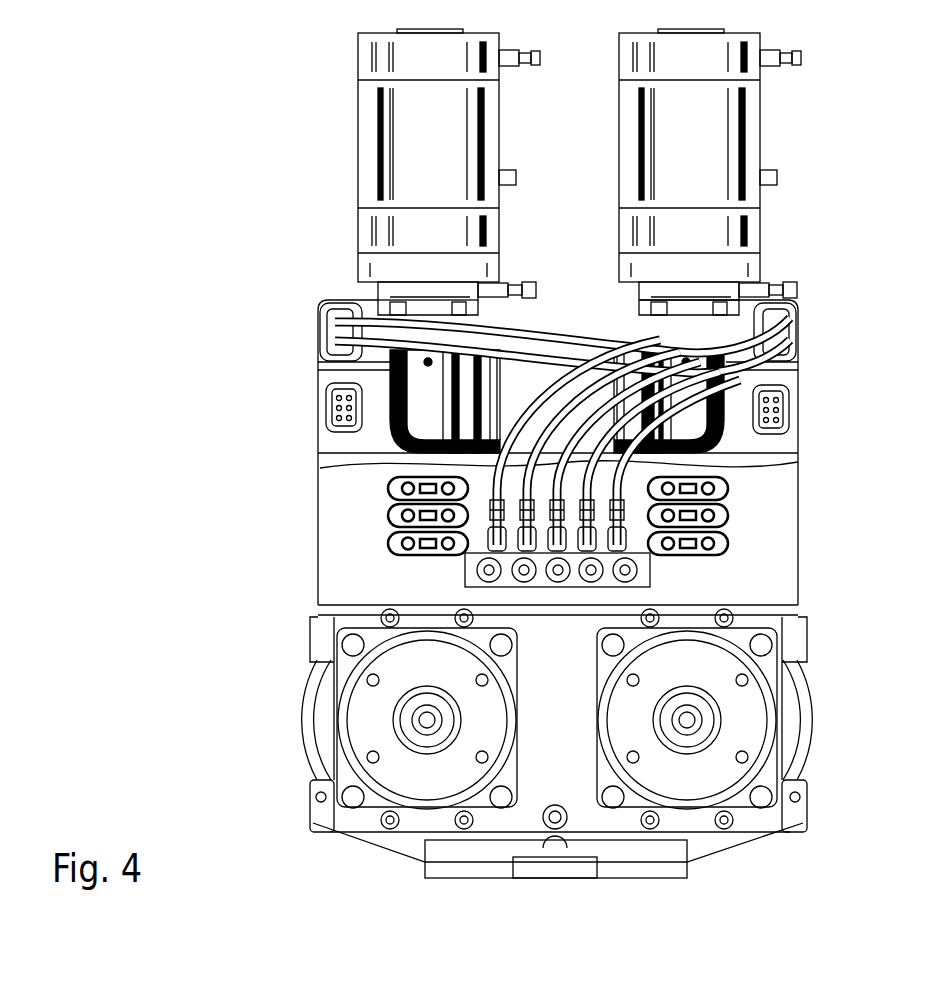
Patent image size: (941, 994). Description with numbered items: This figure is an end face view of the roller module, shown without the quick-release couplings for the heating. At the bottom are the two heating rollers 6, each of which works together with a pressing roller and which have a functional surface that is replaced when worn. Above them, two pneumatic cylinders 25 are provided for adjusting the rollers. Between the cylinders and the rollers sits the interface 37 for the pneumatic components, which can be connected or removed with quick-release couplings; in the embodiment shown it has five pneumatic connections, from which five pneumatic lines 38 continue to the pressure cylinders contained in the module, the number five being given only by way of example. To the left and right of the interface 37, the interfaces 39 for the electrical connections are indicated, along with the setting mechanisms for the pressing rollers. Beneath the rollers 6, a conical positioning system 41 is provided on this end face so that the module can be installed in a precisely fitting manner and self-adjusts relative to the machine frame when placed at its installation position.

The pneumatic cylinder 25 is at (302, 181).
The interface for the electrical connections 39 is at (325, 416).
The pneumatic line 38 is at (525, 470).
The interface for the pneumatic components 37 is at (680, 576).
The heating roller 6 is at (281, 727).
The conical positioning system 41 is at (544, 895).